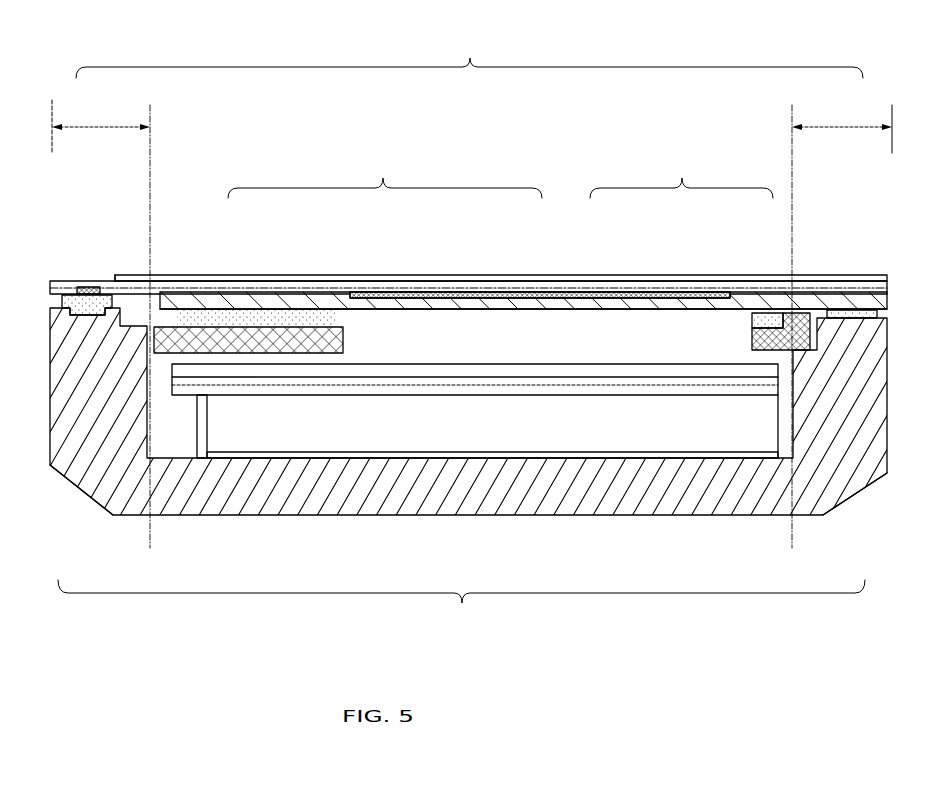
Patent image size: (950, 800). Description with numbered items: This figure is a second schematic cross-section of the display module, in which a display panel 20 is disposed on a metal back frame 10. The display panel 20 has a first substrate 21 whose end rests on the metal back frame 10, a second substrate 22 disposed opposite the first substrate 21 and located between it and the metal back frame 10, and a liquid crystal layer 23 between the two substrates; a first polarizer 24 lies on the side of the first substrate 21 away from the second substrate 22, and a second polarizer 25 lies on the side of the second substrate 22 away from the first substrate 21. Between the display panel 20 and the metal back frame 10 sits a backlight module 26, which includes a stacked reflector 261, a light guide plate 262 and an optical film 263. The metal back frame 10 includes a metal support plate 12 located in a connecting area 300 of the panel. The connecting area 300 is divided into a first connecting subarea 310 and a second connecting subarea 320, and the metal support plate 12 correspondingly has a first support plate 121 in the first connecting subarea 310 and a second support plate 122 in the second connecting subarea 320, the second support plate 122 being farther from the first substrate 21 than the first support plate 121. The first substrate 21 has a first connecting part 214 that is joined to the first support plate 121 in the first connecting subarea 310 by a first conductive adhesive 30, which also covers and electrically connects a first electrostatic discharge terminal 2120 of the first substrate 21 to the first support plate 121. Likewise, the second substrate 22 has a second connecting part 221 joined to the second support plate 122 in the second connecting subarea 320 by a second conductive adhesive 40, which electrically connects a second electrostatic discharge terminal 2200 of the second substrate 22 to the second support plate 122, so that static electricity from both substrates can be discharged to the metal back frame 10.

The metal back frame 10 is at (55, 470).
The metal support plate 12 is at (461, 613).
The first support plate 121 is at (97, 462).
The second support plate 122 is at (840, 483).
The connecting area 300 is at (469, 48).
The first connecting subarea 310 is at (101, 321).
The second connecting subarea 320 is at (842, 322).
The display panel 20 is at (385, 174).
The first substrate 21 is at (242, 302).
The second substrate 22 is at (330, 322).
The liquid crystal layer 23 is at (402, 297).
The first polarizer 24 is at (473, 288).
The second polarizer 25 is at (520, 306).
The backlight module 26 is at (681, 174).
The reflector 261 is at (617, 453).
The light guide plate 262 is at (675, 432).
The optical film 263 is at (737, 377).
The first conductive adhesive 30 is at (72, 293).
The first electrostatic discharge terminal 2120 is at (90, 296).
The first connecting part 214 is at (116, 278).
The second connecting part 221 is at (819, 283).
The second electrostatic discharge terminal 2200 is at (858, 310).
The second conductive adhesive 40 is at (887, 281).